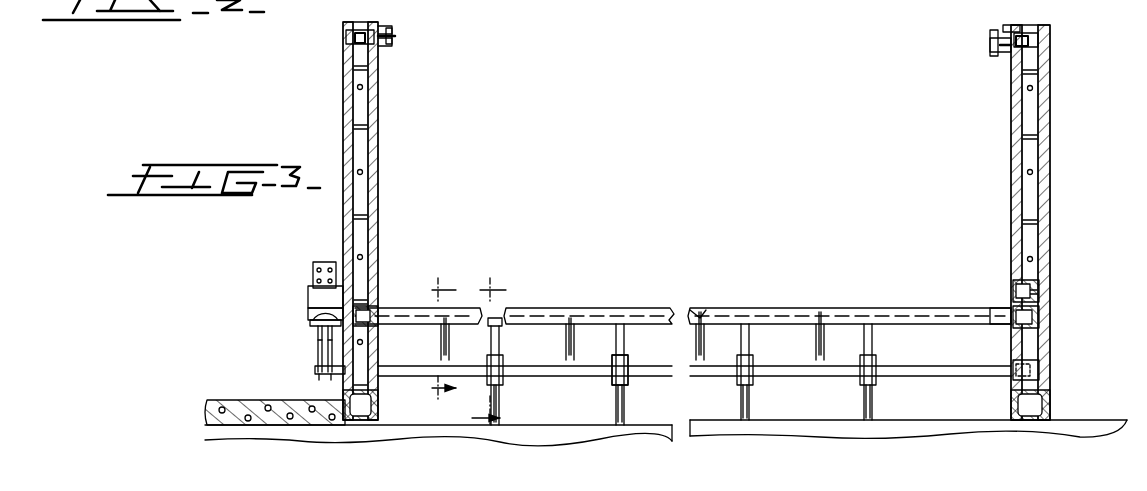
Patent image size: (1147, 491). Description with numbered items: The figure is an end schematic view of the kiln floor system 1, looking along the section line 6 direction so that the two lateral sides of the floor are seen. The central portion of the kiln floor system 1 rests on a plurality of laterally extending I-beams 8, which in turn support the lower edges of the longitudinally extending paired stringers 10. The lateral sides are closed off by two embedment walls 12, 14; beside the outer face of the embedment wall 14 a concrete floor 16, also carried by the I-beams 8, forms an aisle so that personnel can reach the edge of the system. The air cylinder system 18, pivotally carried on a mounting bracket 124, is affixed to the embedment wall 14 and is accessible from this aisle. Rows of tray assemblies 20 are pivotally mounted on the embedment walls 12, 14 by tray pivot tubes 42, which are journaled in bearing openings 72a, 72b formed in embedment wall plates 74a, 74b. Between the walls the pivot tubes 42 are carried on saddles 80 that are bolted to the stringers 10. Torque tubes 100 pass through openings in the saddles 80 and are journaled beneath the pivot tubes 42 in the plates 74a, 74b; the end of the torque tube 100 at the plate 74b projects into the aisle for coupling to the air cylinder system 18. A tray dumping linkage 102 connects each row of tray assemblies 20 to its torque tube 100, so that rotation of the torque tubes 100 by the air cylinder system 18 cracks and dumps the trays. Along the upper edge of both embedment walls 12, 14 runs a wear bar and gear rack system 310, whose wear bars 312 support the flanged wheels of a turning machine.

The kiln floor system 1 is at (624, 300).
The section line 6 is at (436, 336).
The I-beams 8 is at (556, 432).
The stringers 10 is at (497, 412).
The embedment wall 12 is at (1050, 125).
The embedment wall 14 is at (343, 130).
The concrete floor 16 is at (236, 400).
The air cylinder system 18 is at (302, 272).
The tray assemblies 20 is at (848, 308).
The tray pivot tubes 42 is at (995, 310).
The bearing opening 72a is at (1040, 315).
The bearing opening 72b is at (380, 308).
The embedment wall plate 74a is at (1040, 292).
The embedment wall plate 74b is at (318, 368).
The saddles 80 is at (632, 384).
The torque tubes 100 is at (538, 370).
The tray dumping linkage 102 is at (698, 320).
The mounting bracket 124 is at (330, 262).
The wear bar and gear rack system 310 is at (988, 48).
The wear bars 312 is at (380, 22).